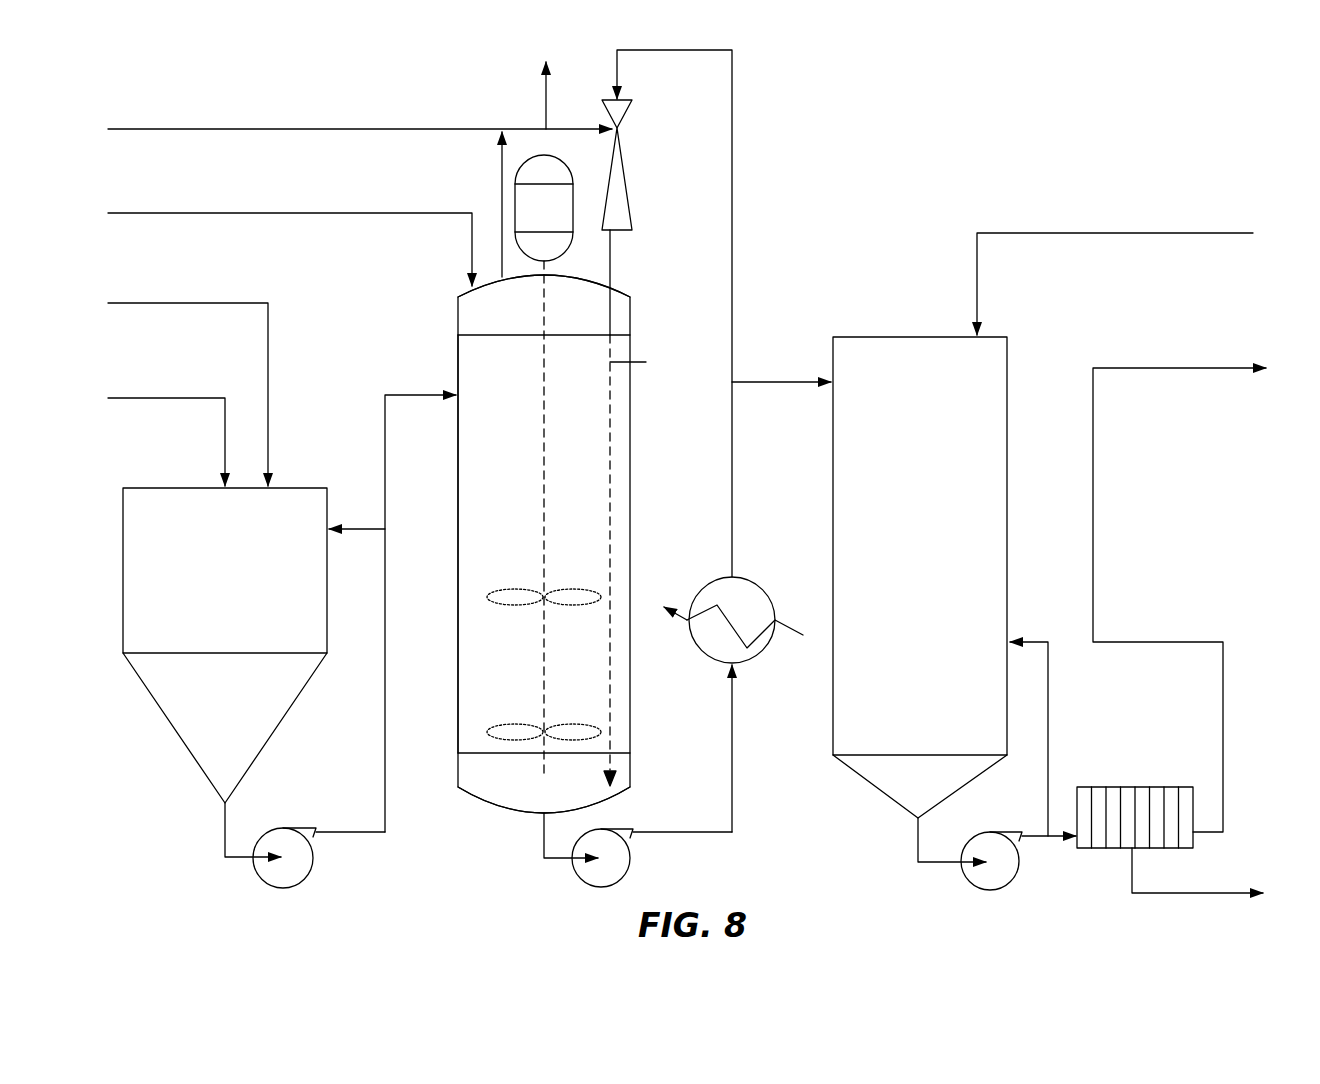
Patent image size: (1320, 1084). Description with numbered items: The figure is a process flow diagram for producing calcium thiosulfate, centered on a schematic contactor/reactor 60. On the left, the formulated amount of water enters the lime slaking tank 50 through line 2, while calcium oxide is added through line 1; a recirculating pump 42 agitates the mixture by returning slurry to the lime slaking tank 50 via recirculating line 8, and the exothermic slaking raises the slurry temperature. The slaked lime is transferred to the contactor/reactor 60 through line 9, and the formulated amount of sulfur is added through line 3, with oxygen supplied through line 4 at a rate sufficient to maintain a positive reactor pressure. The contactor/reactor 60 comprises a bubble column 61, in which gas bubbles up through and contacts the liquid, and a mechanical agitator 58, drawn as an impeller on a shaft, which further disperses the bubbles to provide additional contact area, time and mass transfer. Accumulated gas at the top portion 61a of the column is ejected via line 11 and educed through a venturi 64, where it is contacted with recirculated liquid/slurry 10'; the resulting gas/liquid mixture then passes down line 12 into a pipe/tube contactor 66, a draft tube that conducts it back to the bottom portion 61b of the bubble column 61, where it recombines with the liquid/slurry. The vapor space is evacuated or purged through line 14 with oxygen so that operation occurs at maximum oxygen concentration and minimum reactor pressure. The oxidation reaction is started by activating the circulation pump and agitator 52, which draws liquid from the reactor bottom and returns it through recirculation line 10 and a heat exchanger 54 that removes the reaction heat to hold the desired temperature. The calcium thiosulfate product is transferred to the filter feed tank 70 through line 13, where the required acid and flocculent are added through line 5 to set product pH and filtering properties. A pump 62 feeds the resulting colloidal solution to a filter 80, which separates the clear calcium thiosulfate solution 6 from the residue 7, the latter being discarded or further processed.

The calcium oxide feed line 1 is at (159, 429).
The water feed line 2 is at (181, 381).
The sulfur feed line 3 is at (283, 236).
The oxygen feed stream 4 is at (353, 118).
The acid and flocculent feed line 5 is at (1123, 273).
The calcium thiosulfate solution 6 is at (1182, 586).
The residue 7 is at (1207, 875).
The recirculating line 8 is at (357, 520).
The slaked lime transfer line 9 is at (420, 602).
The reactor recirculation line 10 is at (682, 648).
The recirculated liquid/slurry 10' is at (697, 313).
The gas ejection line 11 is at (500, 187).
The oxygen injection line 12 is at (610, 262).
The product transfer line 13 is at (781, 370).
The vapor space purge line 14 is at (531, 95).
The recirculating pump 42 is at (278, 877).
The lime slaking tank 50 is at (225, 672).
The circulation pump and agitator 52 is at (595, 878).
The heat exchanger 54 is at (755, 598).
The mechanical agitator 58 is at (544, 208).
The contactor/reactor 60 is at (544, 559).
The bubble column 61 is at (488, 693).
The top portion of the bubble column 61a is at (475, 313).
The bottom portion of the bubble column 61b is at (512, 792).
The pump 62 is at (1008, 882).
The venturi 64 is at (622, 190).
The pipe/tube contactor 66 is at (640, 361).
The filter feed tank 70 is at (920, 599).
The filter 80 is at (1157, 795).